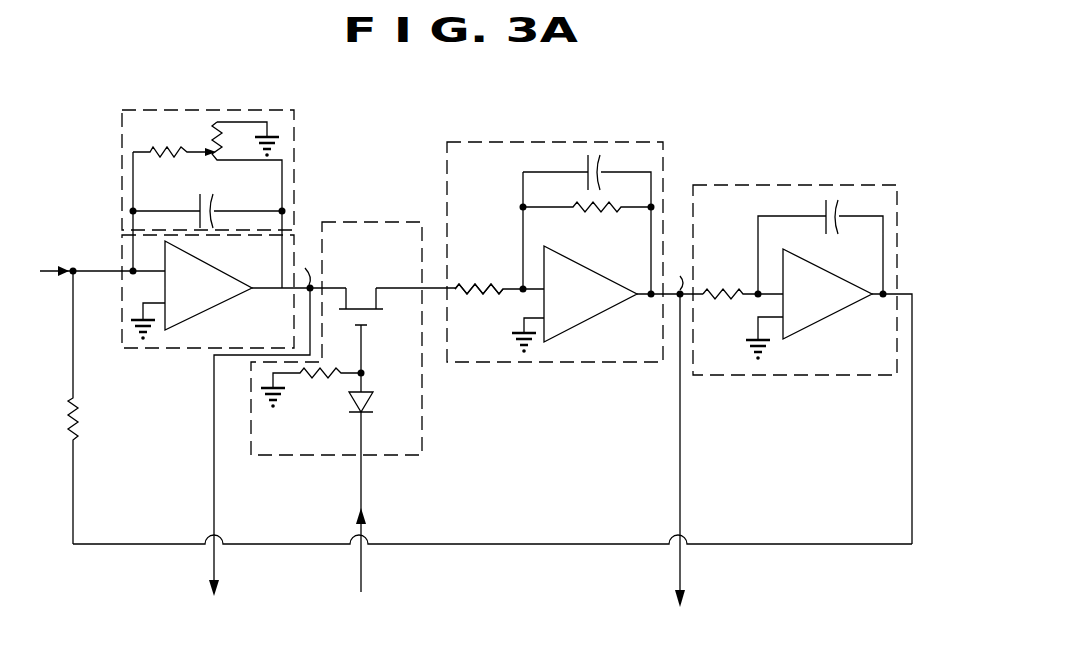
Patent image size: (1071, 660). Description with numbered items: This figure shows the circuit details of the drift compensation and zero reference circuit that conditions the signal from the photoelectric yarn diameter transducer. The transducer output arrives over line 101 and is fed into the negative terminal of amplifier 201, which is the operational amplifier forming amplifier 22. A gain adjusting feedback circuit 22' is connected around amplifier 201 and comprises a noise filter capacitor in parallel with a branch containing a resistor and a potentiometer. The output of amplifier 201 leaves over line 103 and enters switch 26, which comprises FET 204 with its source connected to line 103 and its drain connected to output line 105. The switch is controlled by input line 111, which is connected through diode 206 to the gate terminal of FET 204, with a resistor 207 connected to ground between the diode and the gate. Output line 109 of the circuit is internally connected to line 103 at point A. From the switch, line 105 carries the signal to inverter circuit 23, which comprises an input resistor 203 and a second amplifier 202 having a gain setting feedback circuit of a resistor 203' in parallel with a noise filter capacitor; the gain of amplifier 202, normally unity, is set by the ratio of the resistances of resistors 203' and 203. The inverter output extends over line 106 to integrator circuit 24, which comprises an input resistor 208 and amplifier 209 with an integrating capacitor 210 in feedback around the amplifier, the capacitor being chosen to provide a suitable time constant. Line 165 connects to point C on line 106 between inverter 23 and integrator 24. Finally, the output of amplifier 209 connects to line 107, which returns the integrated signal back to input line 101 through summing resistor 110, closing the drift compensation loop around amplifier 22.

The gain adjusting feedback circuit 22' is at (220, 179).
The amplifier 22 is at (230, 261).
The switch 26 is at (338, 338).
The inverter circuit 23 is at (555, 233).
The integrator circuit 24 is at (795, 259).
The line 101 is at (68, 268).
The summing resistor 110 is at (80, 433).
The amplifier 201 is at (218, 298).
The line 103 is at (305, 292).
The output line 109 is at (214, 499).
The FET 204 is at (380, 313).
The resistor 207 is at (318, 378).
The diode 206 is at (368, 390).
The input line 111 is at (362, 496).
The output line 105 is at (440, 296).
The input resistor 203 is at (480, 271).
The resistor 203' is at (587, 226).
The second amplifier 202 is at (604, 303).
The line 106 is at (665, 303).
The line 165 is at (681, 492).
The input resistor 208 is at (718, 290).
The integrating capacitor 210 is at (822, 212).
The amplifier 209 is at (842, 304).
The line 107 is at (793, 544).